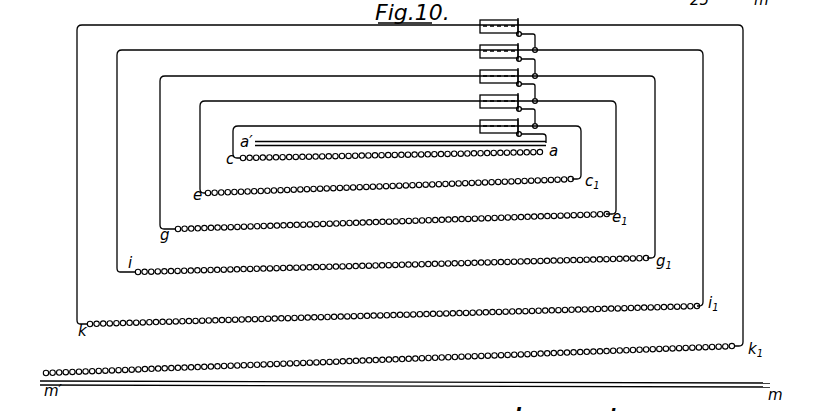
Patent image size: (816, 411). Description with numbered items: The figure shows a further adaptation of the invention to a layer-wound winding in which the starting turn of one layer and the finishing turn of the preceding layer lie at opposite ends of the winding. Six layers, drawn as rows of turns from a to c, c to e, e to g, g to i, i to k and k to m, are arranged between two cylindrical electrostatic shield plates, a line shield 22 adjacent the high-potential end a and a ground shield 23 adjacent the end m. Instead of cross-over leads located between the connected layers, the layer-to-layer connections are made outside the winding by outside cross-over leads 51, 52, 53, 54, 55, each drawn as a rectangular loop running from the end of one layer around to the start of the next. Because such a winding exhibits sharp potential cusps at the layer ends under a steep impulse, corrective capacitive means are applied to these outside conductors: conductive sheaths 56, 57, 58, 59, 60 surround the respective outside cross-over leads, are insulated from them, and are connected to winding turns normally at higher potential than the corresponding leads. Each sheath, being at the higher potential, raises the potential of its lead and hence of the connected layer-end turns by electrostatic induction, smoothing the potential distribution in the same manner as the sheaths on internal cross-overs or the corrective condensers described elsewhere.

The line shield 22 is at (386, 141).
The ground shield 23 is at (200, 386).
The outside cross-over lead 51 is at (342, 126).
The outside cross-over lead 52 is at (330, 101).
The outside cross-over lead 53 is at (325, 76).
The outside cross-over lead 54 is at (320, 47).
The outside cross-over lead 55 is at (317, 22).
The conductive sheath 56 is at (480, 122).
The conductive sheath 57 is at (480, 97).
The conductive sheath 58 is at (480, 72).
The conductive sheath 59 is at (480, 47).
The conductive sheath 60 is at (499, 26).